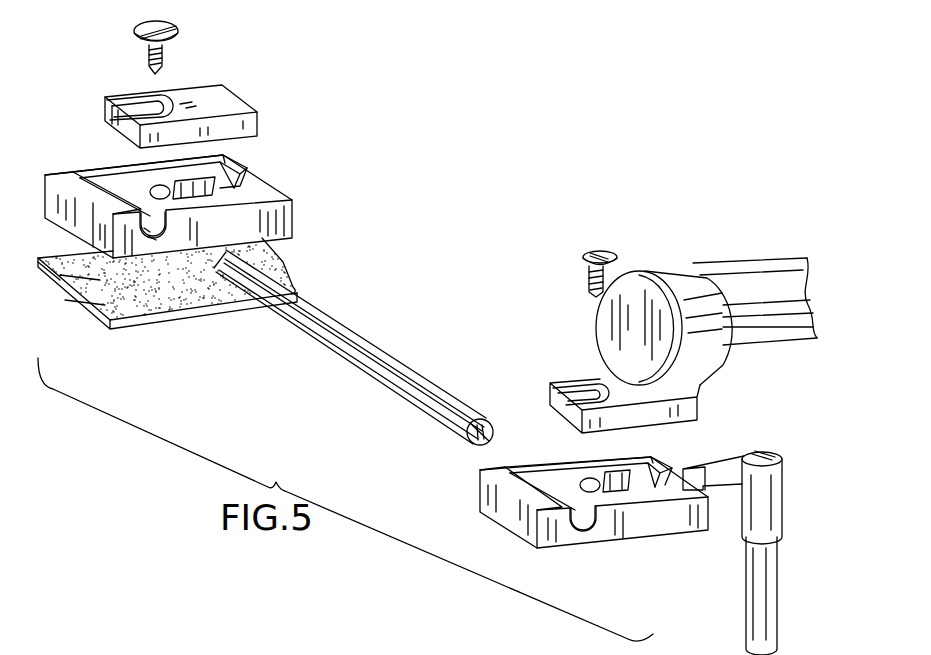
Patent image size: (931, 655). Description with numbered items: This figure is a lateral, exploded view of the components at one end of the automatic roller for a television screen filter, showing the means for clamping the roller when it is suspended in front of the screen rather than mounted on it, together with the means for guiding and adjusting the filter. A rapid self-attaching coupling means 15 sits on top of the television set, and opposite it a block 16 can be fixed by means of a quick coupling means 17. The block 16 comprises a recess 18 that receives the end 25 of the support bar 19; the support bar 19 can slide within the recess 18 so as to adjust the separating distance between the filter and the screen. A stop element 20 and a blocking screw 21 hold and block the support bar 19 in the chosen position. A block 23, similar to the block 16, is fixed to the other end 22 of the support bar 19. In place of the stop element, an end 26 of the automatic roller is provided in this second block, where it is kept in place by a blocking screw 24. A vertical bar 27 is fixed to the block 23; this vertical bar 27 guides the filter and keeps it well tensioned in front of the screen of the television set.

The rapid self-attaching coupling means 15 is at (88, 305).
The block 16 is at (292, 213).
The quick coupling means 17 is at (90, 263).
The recess 18 is at (150, 238).
The support bar 19 is at (312, 337).
The stop element 20 is at (243, 105).
The blocking screw 21 is at (175, 43).
The other end of the support bar 22 is at (477, 448).
The block 23 is at (665, 527).
The blocking screw 24 is at (598, 250).
The end of the support bar 25 is at (220, 256).
The end of the automatic roller 26 is at (680, 283).
The vertical bar 27 is at (757, 607).